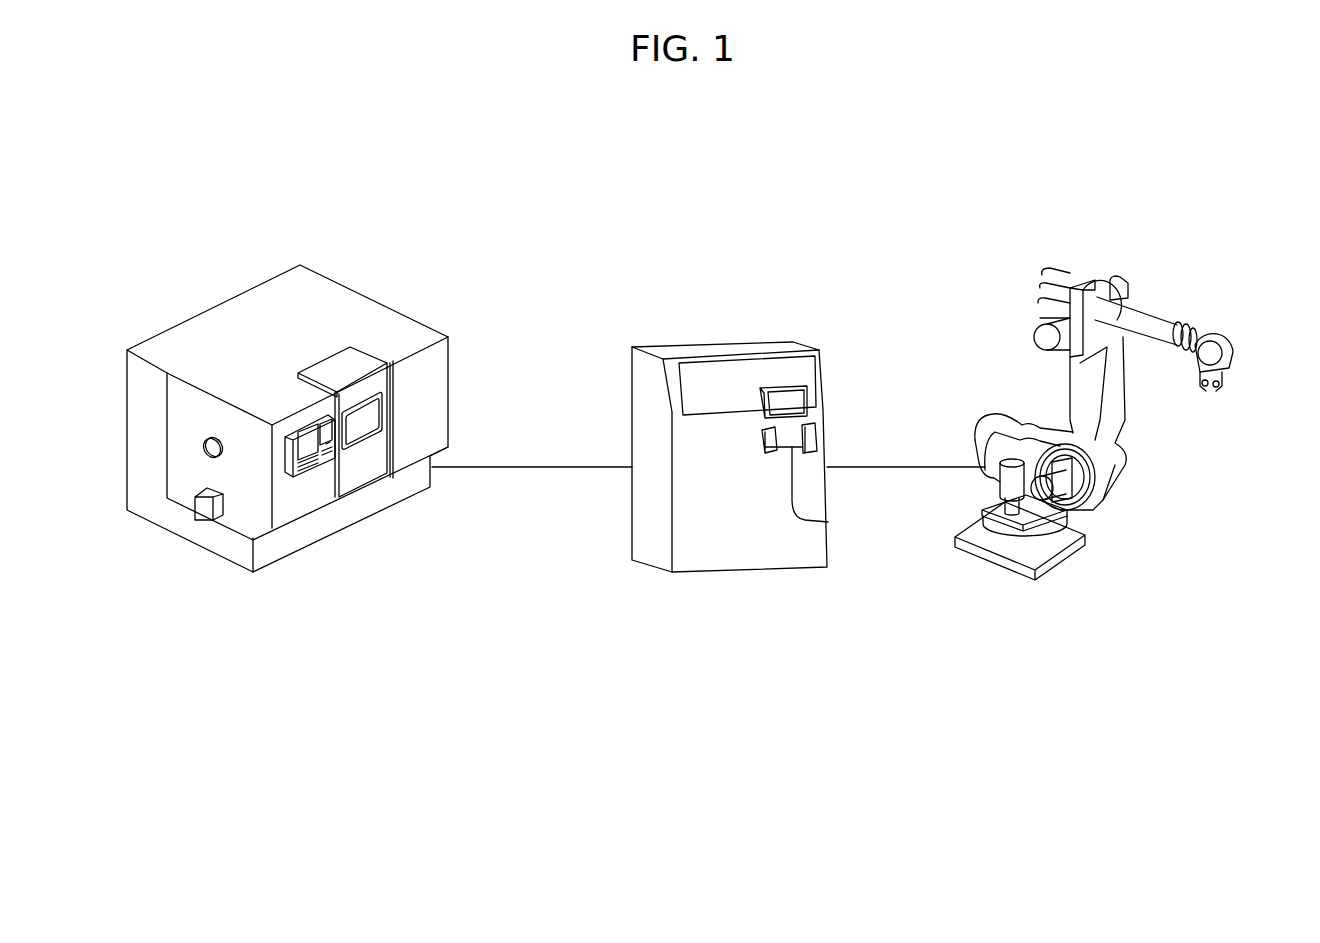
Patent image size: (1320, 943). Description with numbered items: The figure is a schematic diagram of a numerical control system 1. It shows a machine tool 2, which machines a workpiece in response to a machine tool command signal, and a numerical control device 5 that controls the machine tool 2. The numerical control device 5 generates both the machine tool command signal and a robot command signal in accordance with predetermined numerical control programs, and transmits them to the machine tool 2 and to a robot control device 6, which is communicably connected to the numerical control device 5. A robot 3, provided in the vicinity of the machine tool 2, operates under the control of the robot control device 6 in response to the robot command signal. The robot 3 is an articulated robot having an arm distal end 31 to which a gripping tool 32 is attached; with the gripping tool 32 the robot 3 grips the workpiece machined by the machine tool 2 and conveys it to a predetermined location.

The numerical control system 1 is at (1047, 168).
The machine tool 2 is at (380, 322).
The robot 3 is at (1118, 288).
The numerical control device 5 is at (313, 468).
The robot control device 6 is at (777, 348).
The arm distal end 31 is at (1218, 387).
The gripping tool 32 is at (1219, 391).